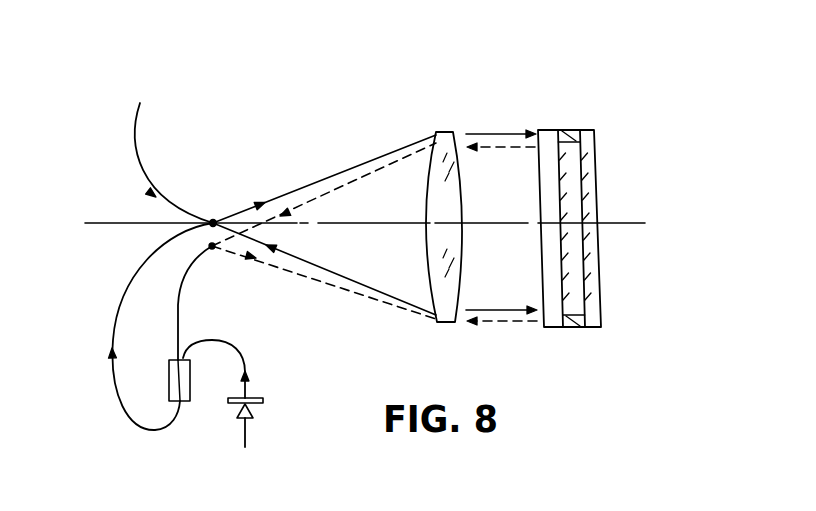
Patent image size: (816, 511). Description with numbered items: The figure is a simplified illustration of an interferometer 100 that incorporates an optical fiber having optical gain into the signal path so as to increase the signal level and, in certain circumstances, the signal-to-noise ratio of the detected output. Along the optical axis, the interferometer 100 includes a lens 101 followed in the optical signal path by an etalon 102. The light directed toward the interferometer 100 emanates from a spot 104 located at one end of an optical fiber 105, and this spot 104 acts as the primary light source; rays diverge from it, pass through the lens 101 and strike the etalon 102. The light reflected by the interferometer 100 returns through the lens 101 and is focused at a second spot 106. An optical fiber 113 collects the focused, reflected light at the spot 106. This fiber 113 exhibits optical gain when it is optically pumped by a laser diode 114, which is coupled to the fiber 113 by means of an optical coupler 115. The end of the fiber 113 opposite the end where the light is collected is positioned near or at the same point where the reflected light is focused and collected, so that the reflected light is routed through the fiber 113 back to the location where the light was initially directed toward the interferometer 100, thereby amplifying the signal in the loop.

The interferometer 100 is at (320, 64).
The lens 101 is at (442, 128).
The etalon 102 is at (576, 113).
The spot 104 is at (212, 218).
The optical fiber 105 is at (135, 137).
The spot 106 is at (213, 250).
The optical fiber 113 is at (178, 328).
The laser diode 114 is at (265, 400).
The optical coupler 115 is at (185, 402).